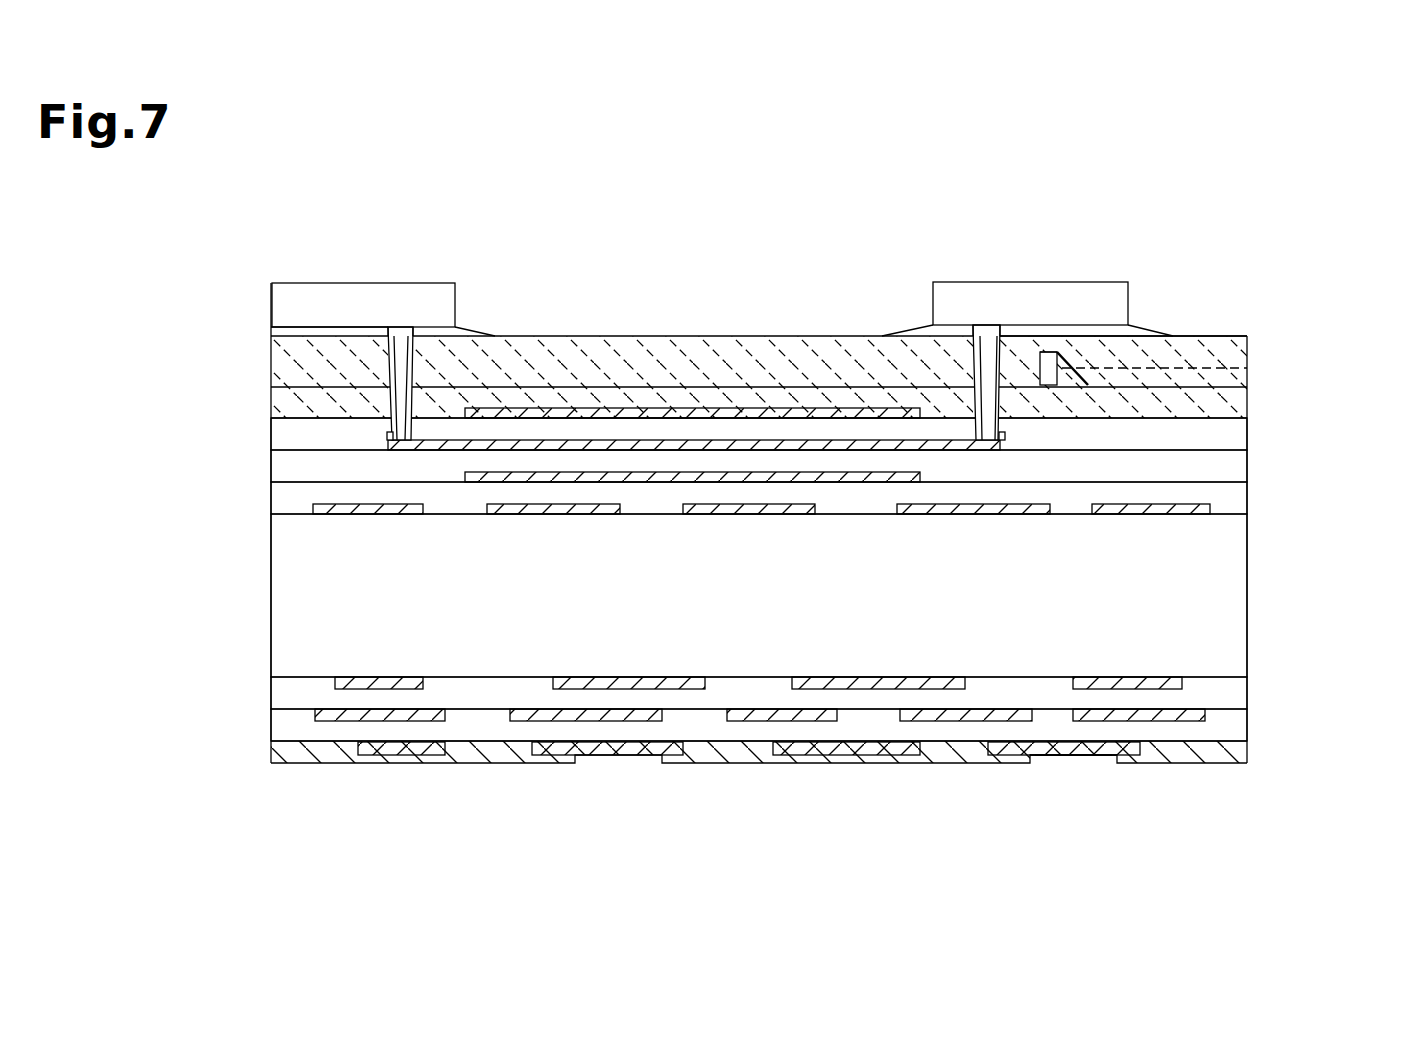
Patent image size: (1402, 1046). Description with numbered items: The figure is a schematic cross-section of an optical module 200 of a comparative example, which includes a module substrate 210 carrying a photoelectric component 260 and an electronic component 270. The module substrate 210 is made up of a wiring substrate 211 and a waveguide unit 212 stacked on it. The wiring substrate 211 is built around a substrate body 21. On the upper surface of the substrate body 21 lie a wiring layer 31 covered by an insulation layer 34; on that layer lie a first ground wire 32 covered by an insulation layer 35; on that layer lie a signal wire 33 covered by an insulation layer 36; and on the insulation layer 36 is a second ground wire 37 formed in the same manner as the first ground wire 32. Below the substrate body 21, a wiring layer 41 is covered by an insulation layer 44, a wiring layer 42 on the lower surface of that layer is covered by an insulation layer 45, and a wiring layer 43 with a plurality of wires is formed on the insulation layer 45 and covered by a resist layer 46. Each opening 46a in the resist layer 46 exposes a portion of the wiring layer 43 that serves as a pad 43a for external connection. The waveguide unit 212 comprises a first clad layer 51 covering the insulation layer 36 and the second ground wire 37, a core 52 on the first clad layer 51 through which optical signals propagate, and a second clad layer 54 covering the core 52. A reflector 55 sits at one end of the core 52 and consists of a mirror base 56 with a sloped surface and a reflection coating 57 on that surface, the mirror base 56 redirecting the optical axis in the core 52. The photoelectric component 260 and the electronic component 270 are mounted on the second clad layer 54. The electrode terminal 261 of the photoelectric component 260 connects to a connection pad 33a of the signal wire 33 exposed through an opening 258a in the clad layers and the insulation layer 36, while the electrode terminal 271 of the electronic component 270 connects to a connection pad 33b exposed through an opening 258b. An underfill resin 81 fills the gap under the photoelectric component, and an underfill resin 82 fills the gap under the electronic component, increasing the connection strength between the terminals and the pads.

The optical module 200 is at (823, 481).
The module substrate 210 is at (802, 511).
The wiring substrate 211 is at (823, 621).
The waveguide unit 212 is at (759, 315).
The substrate body 21 is at (1246, 607).
The wiring layer 31 is at (1025, 515).
The first ground wire 32 is at (857, 483).
The signal wire 33 is at (935, 451).
The connection pad 33a is at (1002, 440).
The connection pad 33b is at (388, 440).
The insulation layer 34 is at (1246, 498).
The insulation layer 35 is at (1246, 465).
The insulation layer 36 is at (1246, 437).
The second ground wire 37 is at (685, 408).
The wiring layer 41 is at (947, 677).
The wiring layer 42 is at (1015, 709).
The wiring layer 43 is at (1140, 745).
The pad 43a is at (1100, 756).
The insulation layer 44 is at (1246, 692).
The insulation layer 45 is at (1246, 722).
The resist layer 46 is at (1246, 752).
The opening 46a is at (1033, 764).
The first clad layer 51 is at (1233, 405).
The core 52 is at (1233, 377).
The second clad layer 54 is at (1227, 336).
The reflector 55 is at (1108, 266).
The mirror base 56 is at (1040, 352).
The reflection coating 57 is at (1088, 385).
The underfill resin 81 is at (905, 328).
The underfill resin 82 is at (467, 327).
The opening 258a is at (982, 335).
The opening 258b is at (399, 337).
The photoelectric component 260 is at (1045, 282).
The electrode terminal 261 is at (1000, 330).
The electronic component 270 is at (297, 283).
The electrode terminal 271 is at (415, 330).